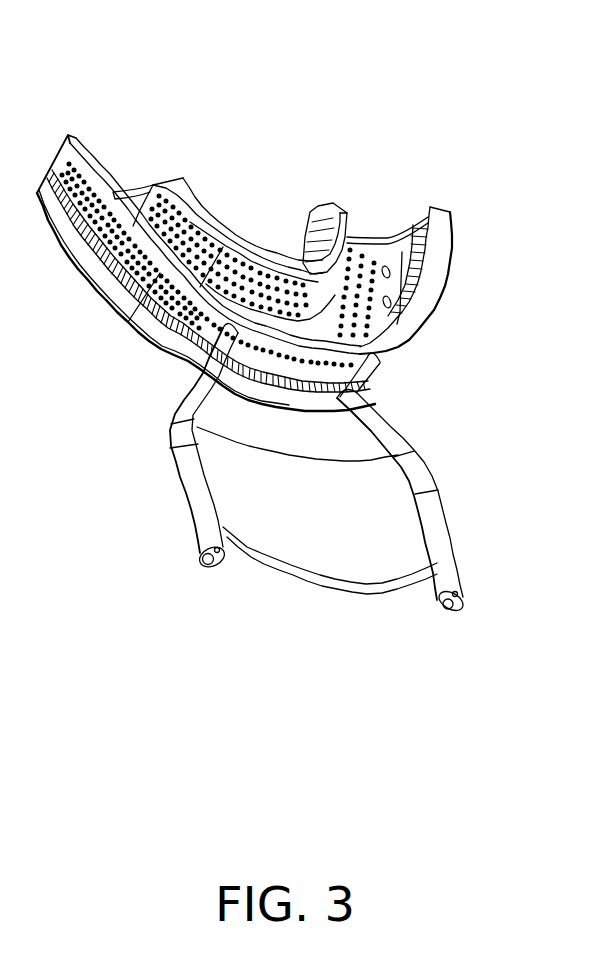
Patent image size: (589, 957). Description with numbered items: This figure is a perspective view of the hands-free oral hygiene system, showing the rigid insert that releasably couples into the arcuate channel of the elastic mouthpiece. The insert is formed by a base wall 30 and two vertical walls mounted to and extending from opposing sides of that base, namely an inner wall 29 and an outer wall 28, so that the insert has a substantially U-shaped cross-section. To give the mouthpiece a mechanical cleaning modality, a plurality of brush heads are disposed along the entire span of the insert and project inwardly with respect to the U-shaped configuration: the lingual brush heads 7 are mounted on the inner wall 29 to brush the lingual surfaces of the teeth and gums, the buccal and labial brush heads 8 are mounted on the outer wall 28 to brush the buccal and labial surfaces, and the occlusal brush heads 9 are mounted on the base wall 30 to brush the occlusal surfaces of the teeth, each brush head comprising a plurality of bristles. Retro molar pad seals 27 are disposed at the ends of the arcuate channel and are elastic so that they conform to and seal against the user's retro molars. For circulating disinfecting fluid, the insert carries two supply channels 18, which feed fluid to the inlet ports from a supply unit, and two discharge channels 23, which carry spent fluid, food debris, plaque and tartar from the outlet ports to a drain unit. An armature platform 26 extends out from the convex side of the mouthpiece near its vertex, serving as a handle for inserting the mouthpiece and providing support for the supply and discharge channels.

The lingual brush heads 7 is at (157, 173).
The buccal and labial brush heads 8 is at (415, 237).
The occlusal brush heads 9 is at (362, 238).
The supply channel 18 is at (199, 552).
The discharge channel 23 is at (211, 568).
The armature platform 26 is at (340, 600).
The retro molar pad seals 27 is at (390, 240).
The outer wall 28 is at (51, 176).
The inner wall 29 is at (153, 183).
The base wall 30 is at (383, 258).